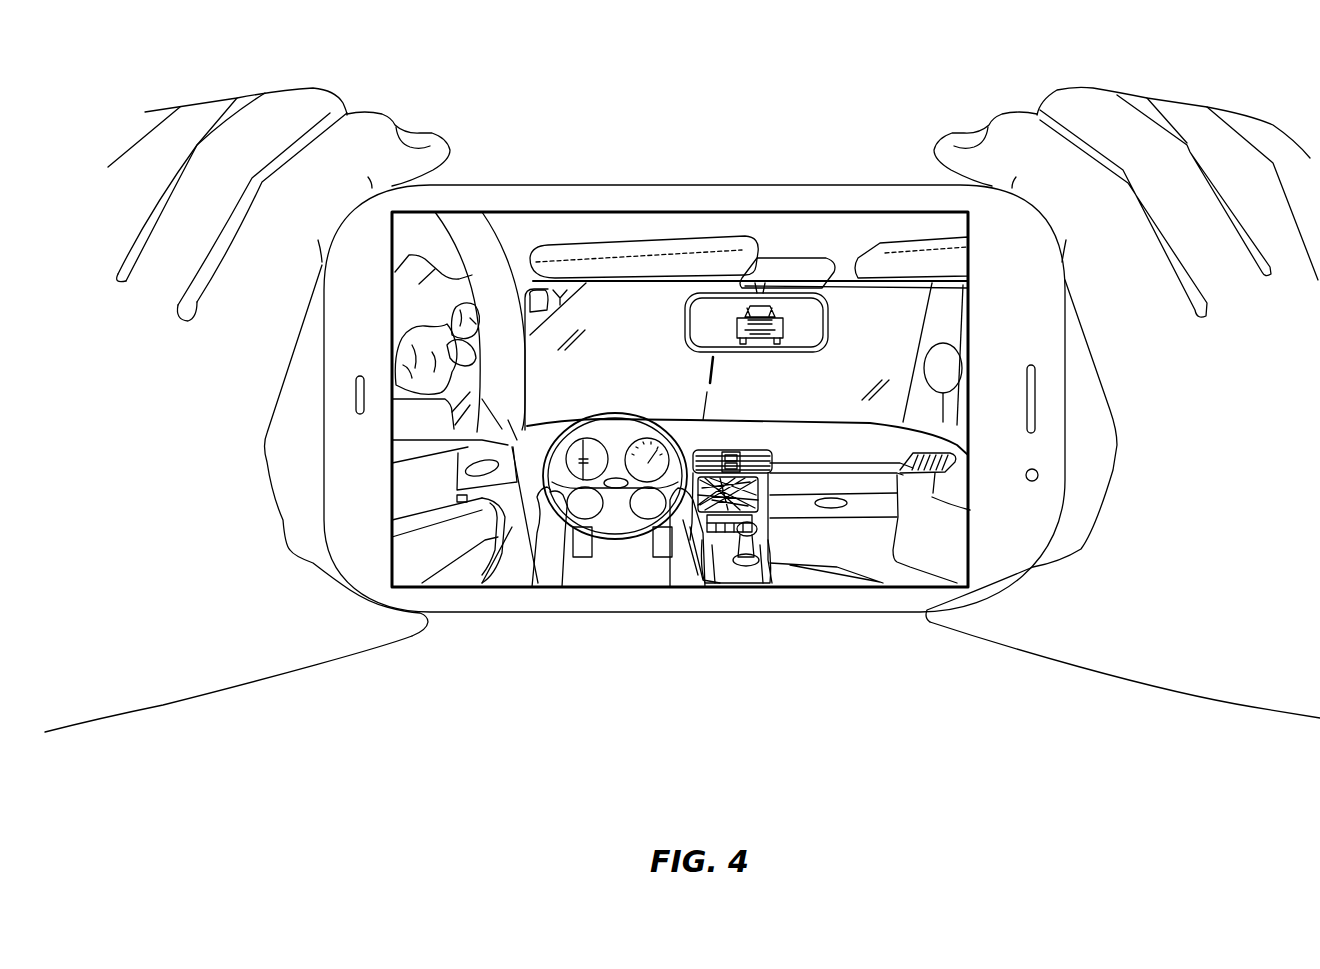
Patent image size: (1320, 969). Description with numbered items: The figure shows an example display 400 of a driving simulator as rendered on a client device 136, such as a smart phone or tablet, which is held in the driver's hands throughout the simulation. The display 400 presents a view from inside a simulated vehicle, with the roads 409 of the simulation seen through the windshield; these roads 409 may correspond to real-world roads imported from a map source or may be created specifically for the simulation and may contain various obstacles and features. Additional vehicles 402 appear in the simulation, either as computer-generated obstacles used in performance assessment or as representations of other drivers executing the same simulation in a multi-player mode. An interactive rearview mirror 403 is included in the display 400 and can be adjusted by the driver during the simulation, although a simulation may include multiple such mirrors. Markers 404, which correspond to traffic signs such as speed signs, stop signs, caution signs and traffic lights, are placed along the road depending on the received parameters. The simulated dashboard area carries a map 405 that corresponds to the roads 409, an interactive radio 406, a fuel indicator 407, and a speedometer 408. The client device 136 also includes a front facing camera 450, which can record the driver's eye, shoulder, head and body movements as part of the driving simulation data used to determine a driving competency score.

The client device 136 is at (812, 183).
The example display 400 is at (877, 554).
The additional vehicles 402 is at (829, 322).
The interactive rearview mirrors 403 is at (957, 304).
The markers 404 is at (942, 343).
The map 405 is at (770, 487).
The interactive radio 406 is at (753, 515).
The fuel indicator 407 is at (582, 436).
The speedometer 408 is at (648, 436).
The roads 409 is at (664, 364).
The front facing camera 450 is at (1030, 483).